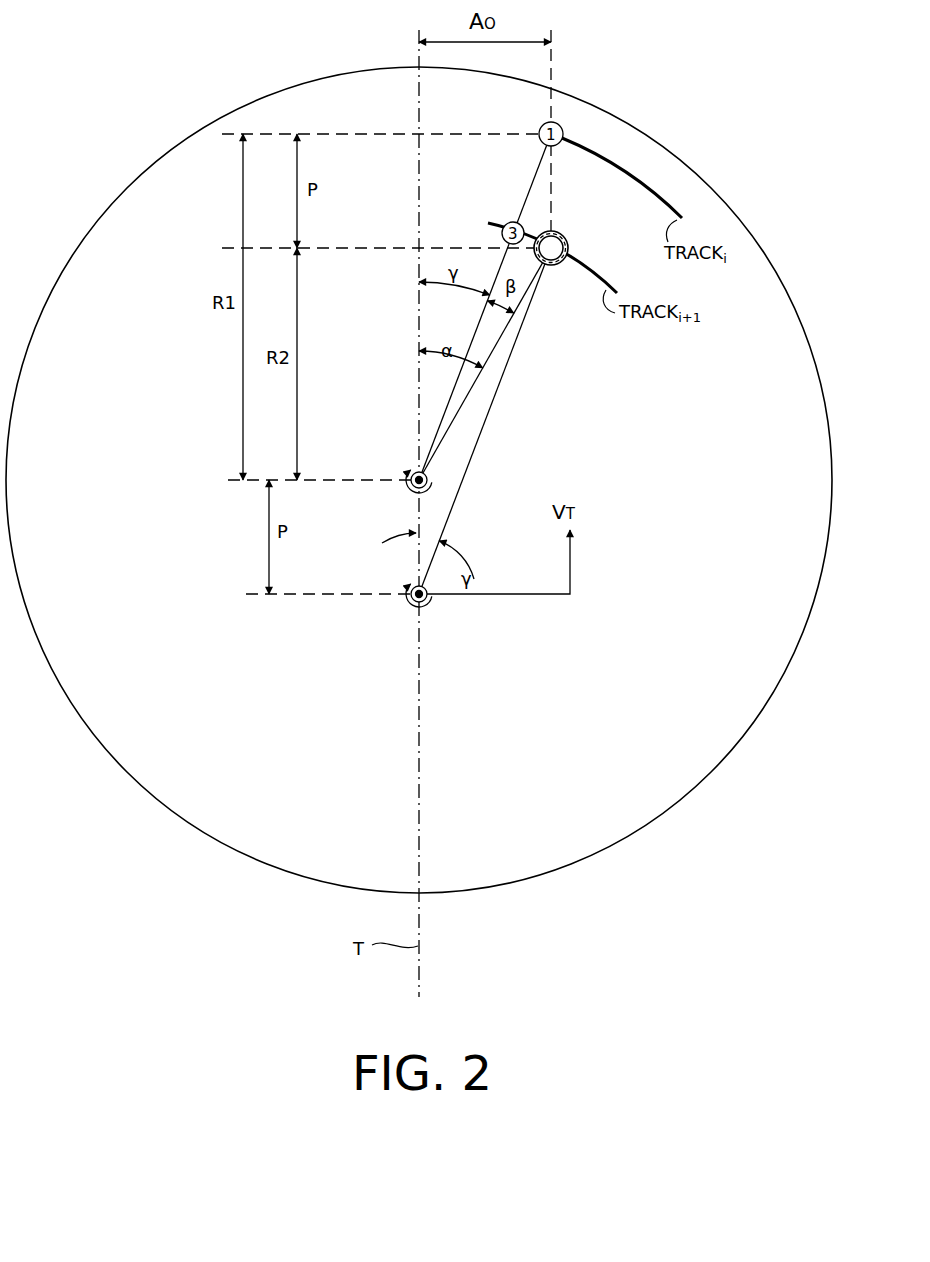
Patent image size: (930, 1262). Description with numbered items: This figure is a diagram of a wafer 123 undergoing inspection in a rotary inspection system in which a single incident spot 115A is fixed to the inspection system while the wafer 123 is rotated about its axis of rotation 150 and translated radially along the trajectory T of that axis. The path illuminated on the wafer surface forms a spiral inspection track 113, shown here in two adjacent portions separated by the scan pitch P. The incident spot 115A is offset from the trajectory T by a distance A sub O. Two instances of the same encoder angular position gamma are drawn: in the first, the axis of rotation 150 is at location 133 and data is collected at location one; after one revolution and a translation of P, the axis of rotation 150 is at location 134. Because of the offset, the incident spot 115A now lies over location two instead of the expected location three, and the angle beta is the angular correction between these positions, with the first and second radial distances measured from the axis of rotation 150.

The inspection track 113 is at (617, 166).
The incident spot 115A is at (562, 266).
The wafer 123 is at (742, 216).
The location of axis of rotation at first instance 133 is at (427, 598).
The location of axis of rotation at second instance 134 is at (428, 478).
The axis of rotation 150 is at (408, 485).